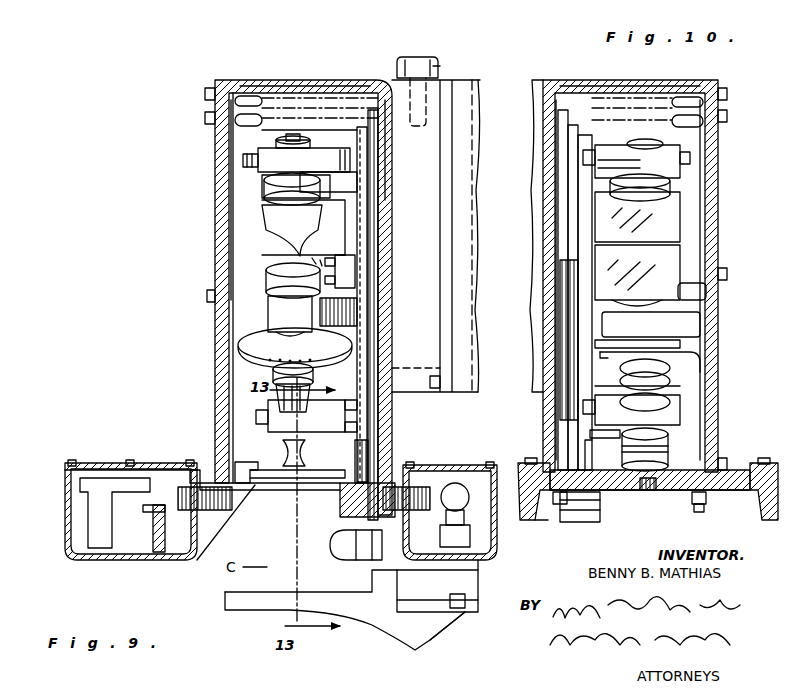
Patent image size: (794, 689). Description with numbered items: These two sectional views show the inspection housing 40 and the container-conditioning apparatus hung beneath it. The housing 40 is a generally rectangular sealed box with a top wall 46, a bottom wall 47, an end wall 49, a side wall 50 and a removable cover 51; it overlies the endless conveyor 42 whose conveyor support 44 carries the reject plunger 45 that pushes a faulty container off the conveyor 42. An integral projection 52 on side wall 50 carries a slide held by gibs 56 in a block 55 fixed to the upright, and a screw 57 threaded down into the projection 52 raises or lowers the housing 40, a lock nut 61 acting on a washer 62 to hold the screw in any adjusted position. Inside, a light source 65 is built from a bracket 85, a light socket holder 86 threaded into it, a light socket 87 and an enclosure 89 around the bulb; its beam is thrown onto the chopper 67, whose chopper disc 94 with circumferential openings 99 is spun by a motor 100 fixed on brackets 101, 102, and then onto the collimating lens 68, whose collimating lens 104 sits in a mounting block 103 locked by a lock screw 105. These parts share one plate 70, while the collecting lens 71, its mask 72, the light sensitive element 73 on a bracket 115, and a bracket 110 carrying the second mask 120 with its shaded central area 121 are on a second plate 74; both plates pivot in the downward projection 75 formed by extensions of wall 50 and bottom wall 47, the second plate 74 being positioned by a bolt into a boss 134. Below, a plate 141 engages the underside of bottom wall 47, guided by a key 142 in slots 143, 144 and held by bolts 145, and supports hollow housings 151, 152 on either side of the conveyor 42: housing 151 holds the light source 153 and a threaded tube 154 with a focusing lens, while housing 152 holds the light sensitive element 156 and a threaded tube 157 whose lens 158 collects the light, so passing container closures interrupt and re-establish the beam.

In FIG. 9, the housing 40 is at (253, 80).
In FIG. 10, the housing 40 is at (680, 80).
In FIG. 9, the endless conveyor 42 is at (240, 595).
In FIG. 9, the conveyor support 44 is at (422, 620).
In FIG. 9, the plunger 45 is at (356, 550).
In FIG. 9, the top wall 46 is at (290, 78).
In FIG. 10, the top wall 46 is at (592, 82).
In FIG. 9, the bottom wall 47 is at (240, 470).
In FIG. 10, the bottom wall 47 is at (650, 501).
In FIG. 10, the end wall 49 is at (690, 266).
In FIG. 9, the side wall 50 is at (380, 226).
In FIG. 10, the side wall 50 is at (548, 137).
In FIG. 9, the removable cover 51 is at (231, 211).
In FIG. 10, the removable cover 51 is at (692, 156).
In FIG. 9, the integral projection 52 is at (398, 97).
In FIG. 10, the integral projection 52 is at (543, 165).
In FIG. 9, the block 55 is at (462, 136).
In FIG. 9, the gibs 56 is at (444, 108).
In FIG. 9, the screw 57 is at (418, 130).
In FIG. 9, the lock nut 61 is at (417, 63).
In FIG. 9, the washer 62 is at (440, 73).
In FIG. 9, the light source 65 is at (262, 182).
In FIG. 10, the light source 65 is at (690, 238).
In FIG. 9, the chopper 67 is at (270, 342).
In FIG. 10, the chopper 67 is at (690, 361).
In FIG. 9, the collimating lens 68 is at (255, 376).
In FIG. 9, the plate 70 is at (366, 434).
In FIG. 10, the plate 70 is at (562, 198).
In FIG. 10, the collecting lens 71 is at (670, 440).
In FIG. 10, the mask 72 is at (675, 399).
In FIG. 10, the light sensitive element 73 is at (685, 325).
In FIG. 9, the second plate 74 is at (355, 458).
In FIG. 10, the second plate 74 is at (582, 435).
In FIG. 9, the projection 75 is at (386, 480).
In FIG. 9, the bracket 85 is at (256, 162).
In FIG. 10, the bracket 85 is at (670, 166).
In FIG. 9, the light socket holder 86 is at (265, 150).
In FIG. 10, the light socket holder 86 is at (700, 134).
In FIG. 9, the light socket 87 is at (264, 194).
In FIG. 10, the light socket 87 is at (672, 182).
In FIG. 9, the enclosure 89 is at (268, 234).
In FIG. 10, the enclosure 89 is at (660, 211).
In FIG. 9, the chopper disc 94 is at (255, 349).
In FIG. 9, the circumferential openings 99 is at (288, 358).
In FIG. 9, the motor 100 is at (285, 272).
In FIG. 9, the bracket 101 is at (352, 284).
In FIG. 9, the bracket 102 is at (343, 318).
In FIG. 9, the mounting block 103 is at (337, 424).
In FIG. 9, the collimating lens 104 is at (314, 376).
In FIG. 9, the lock screw 105 is at (252, 418).
In FIG. 10, the bracket 110 is at (665, 416).
In FIG. 10, the bracket 115 is at (680, 343).
In FIG. 10, the second mask 120 is at (670, 384).
In FIG. 10, the shaded central area 121 is at (680, 371).
In FIG. 10, the boss 134 is at (570, 358).
In FIG. 10, the plate 141 is at (735, 470).
In FIG. 10, the key 142 is at (646, 490).
In FIG. 10, the slot 143 is at (586, 466).
In FIG. 10, the slot 144 is at (642, 480).
In FIG. 10, the bolts 145 is at (560, 506).
In FIG. 9, the hollow housing 151 is at (475, 463).
In FIG. 9, the hollow housing 152 is at (68, 474).
In FIG. 9, the light source 153 is at (458, 497).
In FIG. 10, the light source 153 is at (500, 527).
In FIG. 9, the threaded tube 154 is at (422, 478).
In FIG. 9, the light sensitive element 156 is at (96, 517).
In FIG. 9, the threaded tube 157 is at (190, 470).
In FIG. 9, the lens 158 is at (225, 512).